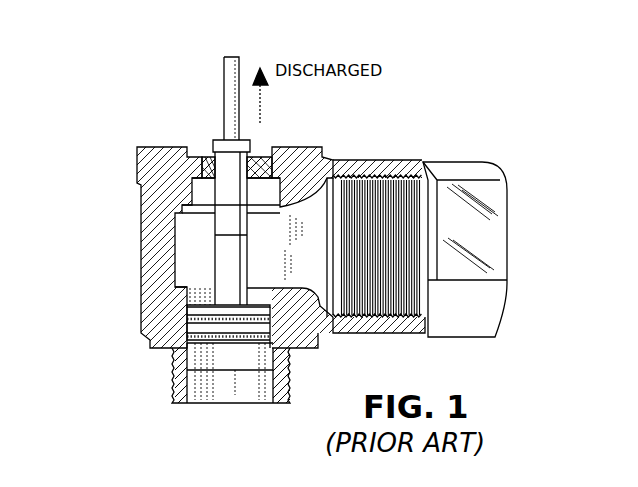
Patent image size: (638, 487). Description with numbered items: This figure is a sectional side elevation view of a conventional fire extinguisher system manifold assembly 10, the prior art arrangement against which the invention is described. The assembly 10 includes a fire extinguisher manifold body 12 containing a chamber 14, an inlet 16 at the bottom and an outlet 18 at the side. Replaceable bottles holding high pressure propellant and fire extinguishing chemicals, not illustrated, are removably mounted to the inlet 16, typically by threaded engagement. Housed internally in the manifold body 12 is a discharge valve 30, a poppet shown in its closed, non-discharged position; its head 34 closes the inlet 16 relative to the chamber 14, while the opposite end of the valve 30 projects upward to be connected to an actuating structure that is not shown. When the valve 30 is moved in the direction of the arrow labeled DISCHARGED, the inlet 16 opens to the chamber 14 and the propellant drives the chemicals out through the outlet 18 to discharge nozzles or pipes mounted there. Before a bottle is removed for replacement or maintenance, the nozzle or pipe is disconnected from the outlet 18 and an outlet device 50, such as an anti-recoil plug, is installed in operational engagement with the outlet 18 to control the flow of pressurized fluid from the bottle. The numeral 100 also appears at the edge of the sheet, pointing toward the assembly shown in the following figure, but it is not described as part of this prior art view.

The fire extinguisher system manifold assembly 10 is at (150, 74).
The fire extinguisher manifold body 12 is at (358, 158).
The chamber 14 is at (318, 218).
The inlet 16 is at (270, 383).
The outlet 18 is at (363, 332).
The discharge valve 30 is at (207, 173).
The valve head 34 is at (215, 342).
The outlet device 50 is at (455, 160).
The valve assembly 100 is at (95, 482).